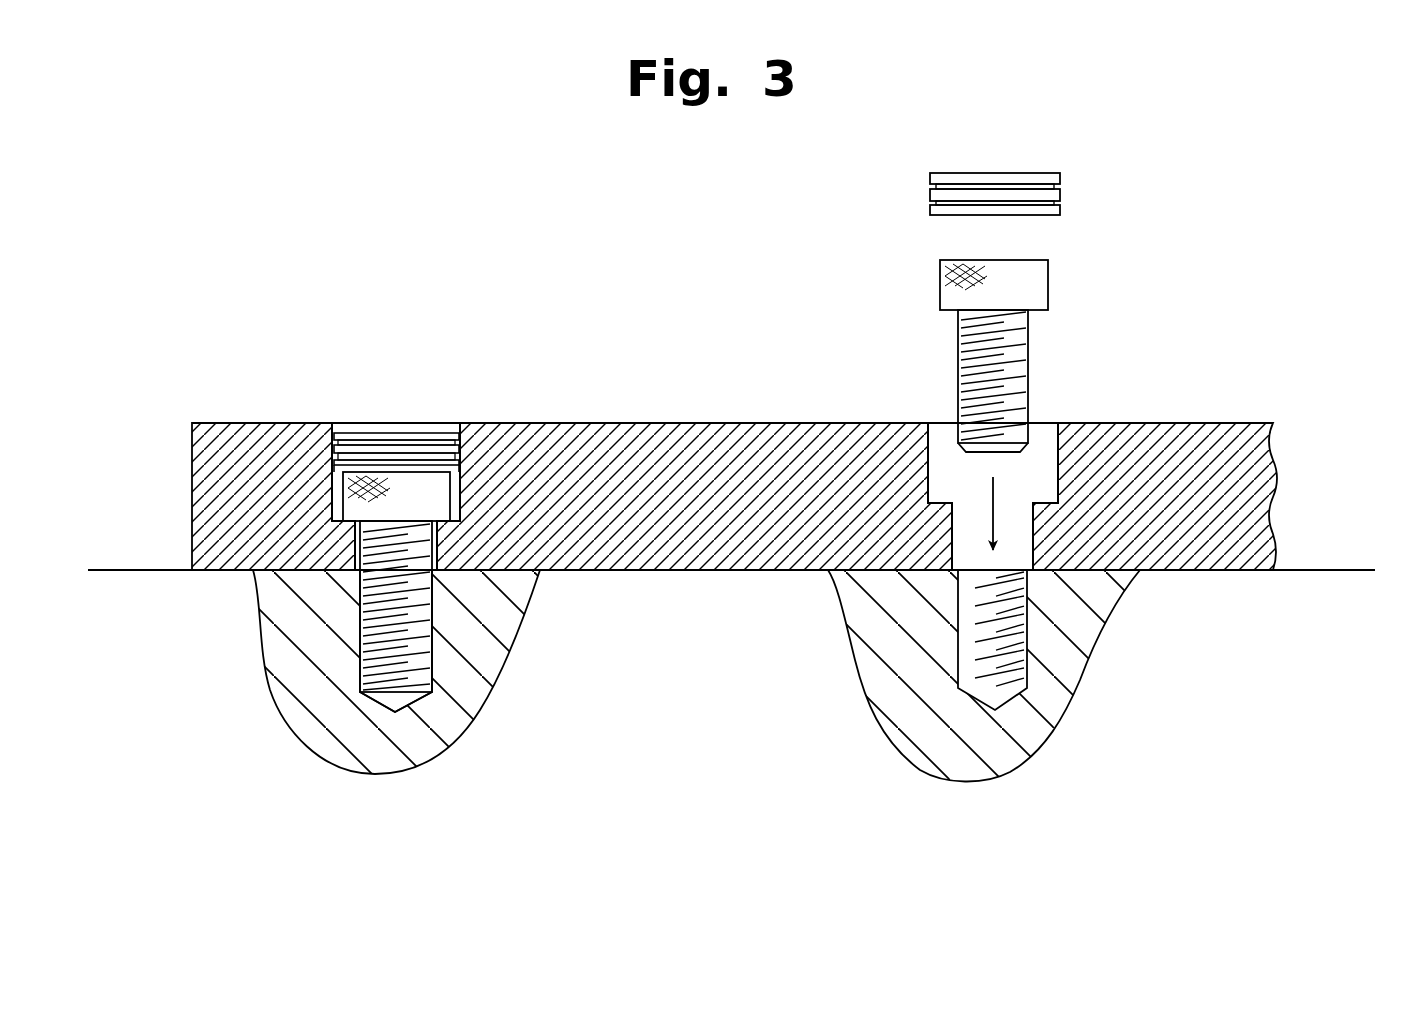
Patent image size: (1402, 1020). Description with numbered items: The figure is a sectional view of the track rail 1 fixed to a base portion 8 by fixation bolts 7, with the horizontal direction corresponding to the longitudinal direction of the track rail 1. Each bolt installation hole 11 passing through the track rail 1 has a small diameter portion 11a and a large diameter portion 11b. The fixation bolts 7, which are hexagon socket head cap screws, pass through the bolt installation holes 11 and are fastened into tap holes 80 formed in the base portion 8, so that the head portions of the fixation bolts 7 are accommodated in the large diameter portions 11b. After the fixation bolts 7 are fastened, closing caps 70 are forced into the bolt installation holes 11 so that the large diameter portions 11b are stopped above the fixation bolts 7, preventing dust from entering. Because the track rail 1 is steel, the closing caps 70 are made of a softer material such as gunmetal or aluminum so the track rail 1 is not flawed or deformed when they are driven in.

The track rail 1 is at (1211, 419).
The fixation bolt 7 is at (425, 480).
The closing cap 70 is at (448, 420).
The base portion 8 is at (1330, 568).
The tap hole 80 is at (430, 627).
The bolt installation hole 11 is at (365, 335).
The small diameter portion 11a is at (354, 556).
The large diameter portion 11b is at (343, 488).